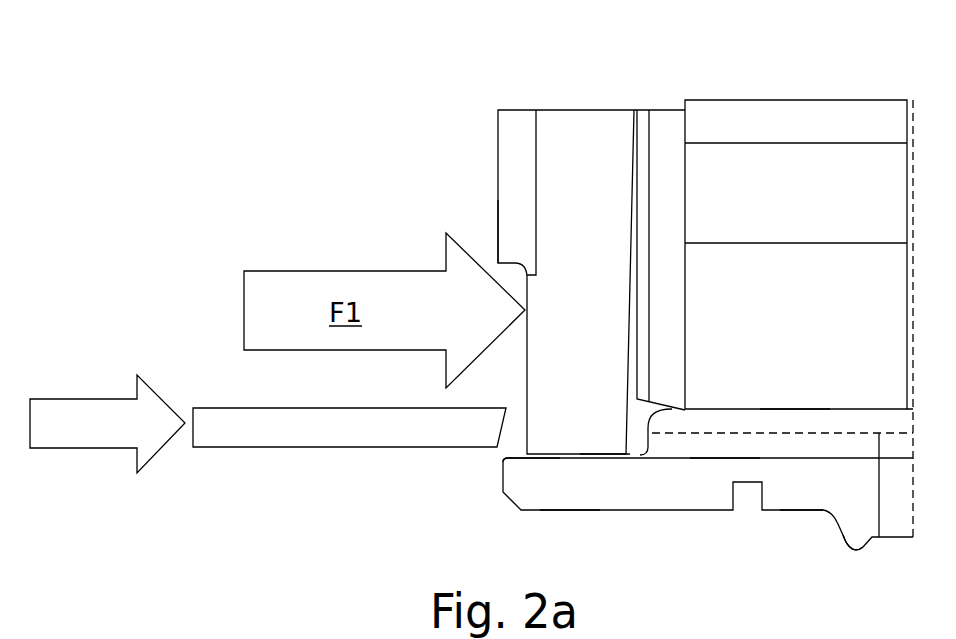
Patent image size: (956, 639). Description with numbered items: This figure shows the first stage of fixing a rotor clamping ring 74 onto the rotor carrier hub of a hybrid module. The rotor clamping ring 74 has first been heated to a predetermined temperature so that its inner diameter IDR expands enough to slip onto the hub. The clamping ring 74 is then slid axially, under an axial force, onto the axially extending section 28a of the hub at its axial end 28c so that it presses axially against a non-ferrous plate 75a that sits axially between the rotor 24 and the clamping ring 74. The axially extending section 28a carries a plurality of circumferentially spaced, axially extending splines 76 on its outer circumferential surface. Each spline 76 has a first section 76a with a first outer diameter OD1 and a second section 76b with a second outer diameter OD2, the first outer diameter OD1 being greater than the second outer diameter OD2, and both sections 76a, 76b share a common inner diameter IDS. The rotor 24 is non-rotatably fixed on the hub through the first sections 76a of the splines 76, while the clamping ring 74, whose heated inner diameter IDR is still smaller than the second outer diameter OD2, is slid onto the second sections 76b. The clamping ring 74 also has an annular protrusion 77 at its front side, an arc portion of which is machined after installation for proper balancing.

The rotor clamping ring 74 is at (527, 155).
The annular protrusion 77 is at (508, 217).
The non-ferrous plate 75a is at (688, 93).
The rotor 24 is at (860, 93).
The splines 76 is at (848, 395).
The first outer diameter OD1 is at (793, 407).
The second outer diameter OD2 is at (606, 453).
The axial end 28c is at (475, 515).
The second section 76b is at (582, 458).
The first section 76a is at (723, 446).
The axially extending section 28a is at (807, 478).
The inner diameter IDS is at (853, 459).
The inner diameter IDR is at (545, 457).